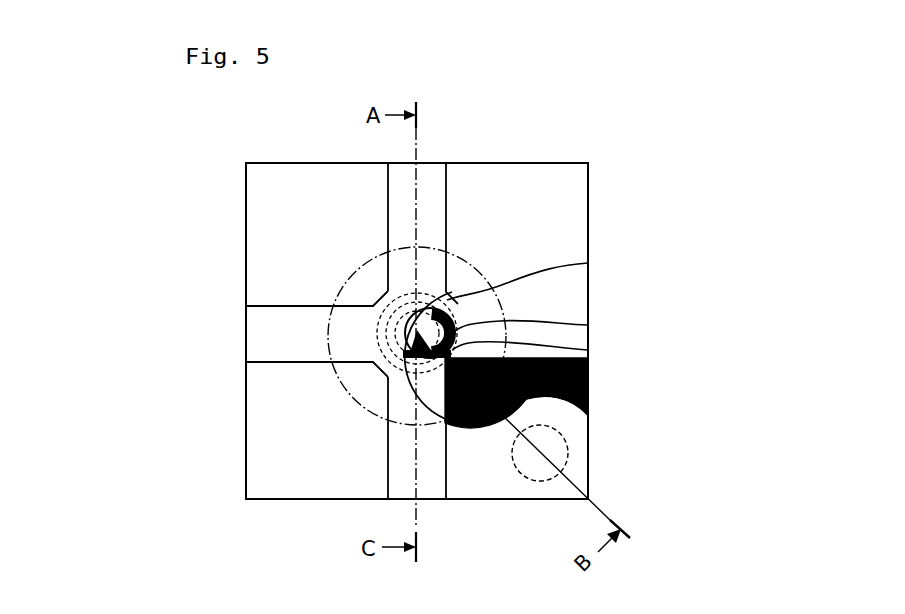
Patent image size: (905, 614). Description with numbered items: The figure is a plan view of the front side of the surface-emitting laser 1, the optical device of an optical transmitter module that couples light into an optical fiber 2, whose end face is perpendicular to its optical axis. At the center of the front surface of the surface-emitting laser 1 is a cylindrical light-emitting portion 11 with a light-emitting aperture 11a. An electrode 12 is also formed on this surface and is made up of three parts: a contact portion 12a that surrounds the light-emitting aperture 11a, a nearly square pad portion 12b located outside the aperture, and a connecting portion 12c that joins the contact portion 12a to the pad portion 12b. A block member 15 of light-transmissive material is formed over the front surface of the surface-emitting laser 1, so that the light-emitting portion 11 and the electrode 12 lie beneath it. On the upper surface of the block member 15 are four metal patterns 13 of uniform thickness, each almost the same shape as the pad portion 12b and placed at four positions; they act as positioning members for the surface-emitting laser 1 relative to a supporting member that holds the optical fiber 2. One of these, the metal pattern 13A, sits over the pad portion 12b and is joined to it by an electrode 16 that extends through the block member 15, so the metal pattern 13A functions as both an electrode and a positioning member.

The surface-emitting laser 1 is at (606, 181).
The optical fiber 2 is at (354, 273).
The light-emitting portion 11 is at (452, 303).
The light-emitting aperture 11a is at (448, 298).
The electrode 12 is at (655, 303).
The contact portion 12a is at (588, 325).
The pad portion 12b is at (588, 377).
The connecting portion 12c is at (588, 350).
The metal patterns 13 is at (277, 210).
The metal pattern 13A is at (577, 432).
The block member 15 is at (282, 334).
The electrode 16 is at (523, 471).